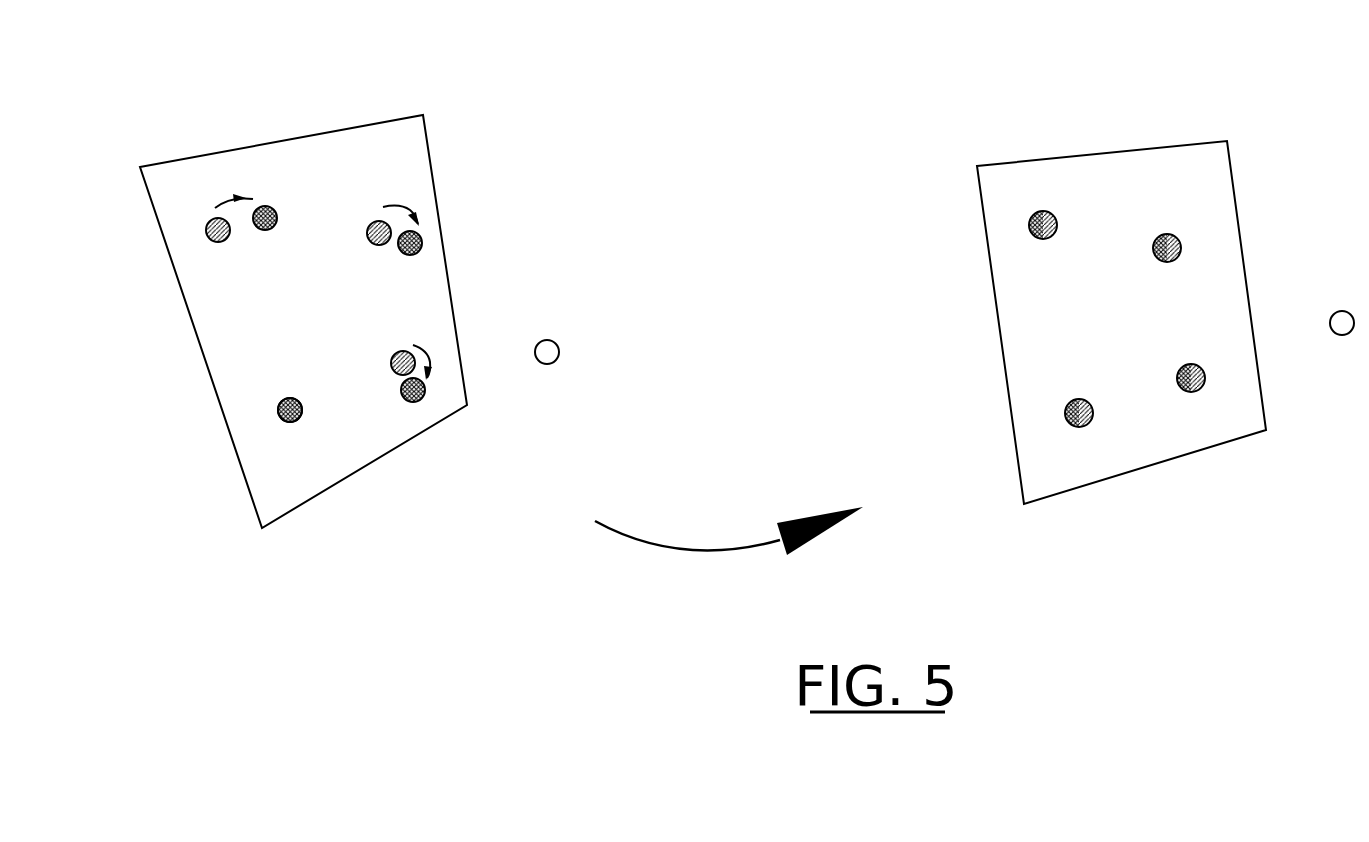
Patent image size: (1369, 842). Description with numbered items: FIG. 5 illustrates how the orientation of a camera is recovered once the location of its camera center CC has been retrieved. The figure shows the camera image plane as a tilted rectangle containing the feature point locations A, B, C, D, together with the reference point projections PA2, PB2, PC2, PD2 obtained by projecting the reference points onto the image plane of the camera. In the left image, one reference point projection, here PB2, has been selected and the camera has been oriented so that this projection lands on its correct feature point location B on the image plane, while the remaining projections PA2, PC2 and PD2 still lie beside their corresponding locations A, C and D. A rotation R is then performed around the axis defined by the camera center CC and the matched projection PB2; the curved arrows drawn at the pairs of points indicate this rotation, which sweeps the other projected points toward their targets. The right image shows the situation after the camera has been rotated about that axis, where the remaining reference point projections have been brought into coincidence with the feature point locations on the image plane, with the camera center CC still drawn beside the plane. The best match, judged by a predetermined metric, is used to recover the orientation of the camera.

The rotation R is at (228, 200).
The feature point location A is at (207, 239).
The feature point location B is at (303, 415).
The feature point location C is at (393, 370).
The feature point location D is at (368, 239).
The reference point projection PA2 is at (277, 209).
The reference point projection PB2 is at (279, 413).
The reference point projection PC2 is at (425, 397).
The reference point projection PD2 is at (421, 237).
The camera center CC is at (556, 345).